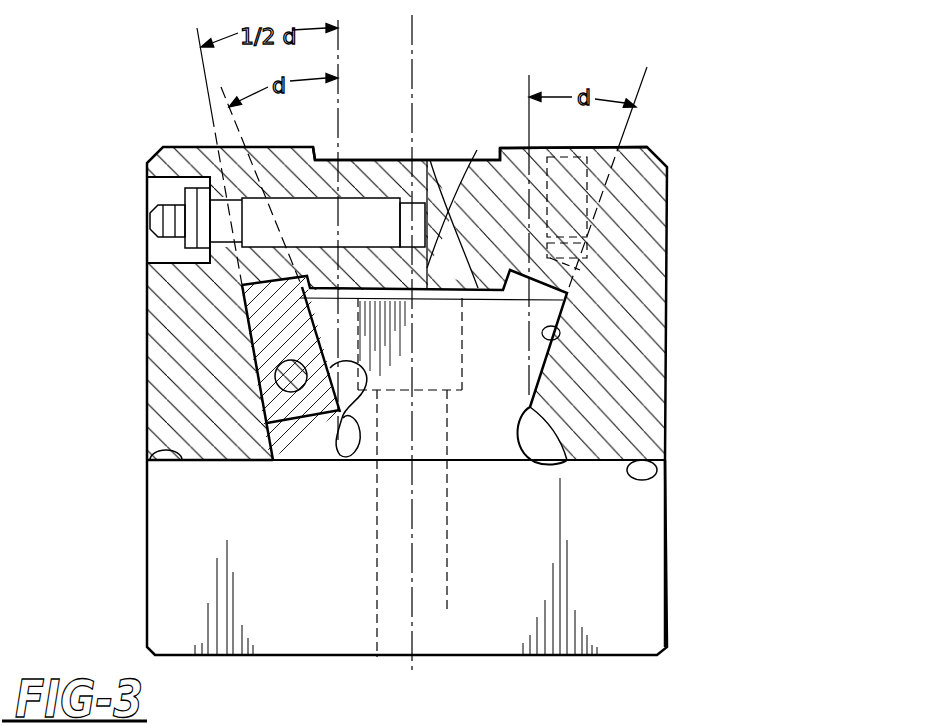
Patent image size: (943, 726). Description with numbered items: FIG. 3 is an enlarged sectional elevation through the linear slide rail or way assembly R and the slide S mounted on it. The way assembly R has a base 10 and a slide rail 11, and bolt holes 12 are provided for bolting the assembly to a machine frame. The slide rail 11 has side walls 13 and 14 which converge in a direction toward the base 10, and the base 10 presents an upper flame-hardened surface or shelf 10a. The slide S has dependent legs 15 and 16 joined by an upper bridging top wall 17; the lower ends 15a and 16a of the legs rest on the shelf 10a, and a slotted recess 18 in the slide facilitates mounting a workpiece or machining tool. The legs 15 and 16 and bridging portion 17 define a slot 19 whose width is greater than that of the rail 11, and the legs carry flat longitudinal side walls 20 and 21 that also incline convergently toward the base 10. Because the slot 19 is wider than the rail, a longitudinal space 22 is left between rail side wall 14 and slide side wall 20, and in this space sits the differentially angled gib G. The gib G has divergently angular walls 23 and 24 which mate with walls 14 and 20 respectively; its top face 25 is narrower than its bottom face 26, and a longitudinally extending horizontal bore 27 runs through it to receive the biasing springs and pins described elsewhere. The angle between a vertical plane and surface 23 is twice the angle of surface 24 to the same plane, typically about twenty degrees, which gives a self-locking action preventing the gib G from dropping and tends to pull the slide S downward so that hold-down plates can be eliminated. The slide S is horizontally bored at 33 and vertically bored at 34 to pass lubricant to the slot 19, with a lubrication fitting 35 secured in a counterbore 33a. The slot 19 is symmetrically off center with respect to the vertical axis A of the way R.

The base 10 is at (673, 582).
The upper flame-hardened surface or shelf 10a is at (275, 460).
The slide rail 11 is at (513, 368).
The bolt holes 12 is at (447, 612).
The side wall 13 is at (556, 340).
The side wall 14 is at (341, 440).
The slide leg 15 is at (258, 340).
The lower end of slide leg 15a is at (147, 458).
The slide leg 16 is at (650, 382).
The lower end of slide leg 16a is at (640, 458).
The upper bridging top wall 17 is at (413, 148).
The slotted recess 18 is at (473, 145).
The slot 19 is at (478, 150).
The flat longitudinal side wall 20 is at (265, 375).
The flat longitudinal side wall 21 is at (567, 298).
The longitudinal space 22 is at (307, 312).
The divergently angular wall 23 is at (293, 393).
The divergently angular wall 24 is at (262, 356).
The top face of the gib 25 is at (242, 281).
The bottom face of the gib 26 is at (203, 460).
The horizontal bore 27 is at (288, 445).
The horizontal bore 33 is at (368, 198).
The counterbore 33a is at (147, 188).
The vertical bore 34 is at (428, 160).
The lubrication fitting 35 is at (197, 250).
The slide S is at (662, 203).
The linear slide rail or way assembly R is at (668, 514).
The differentially angled gib G is at (262, 418).
The vertical axis A is at (412, 571).